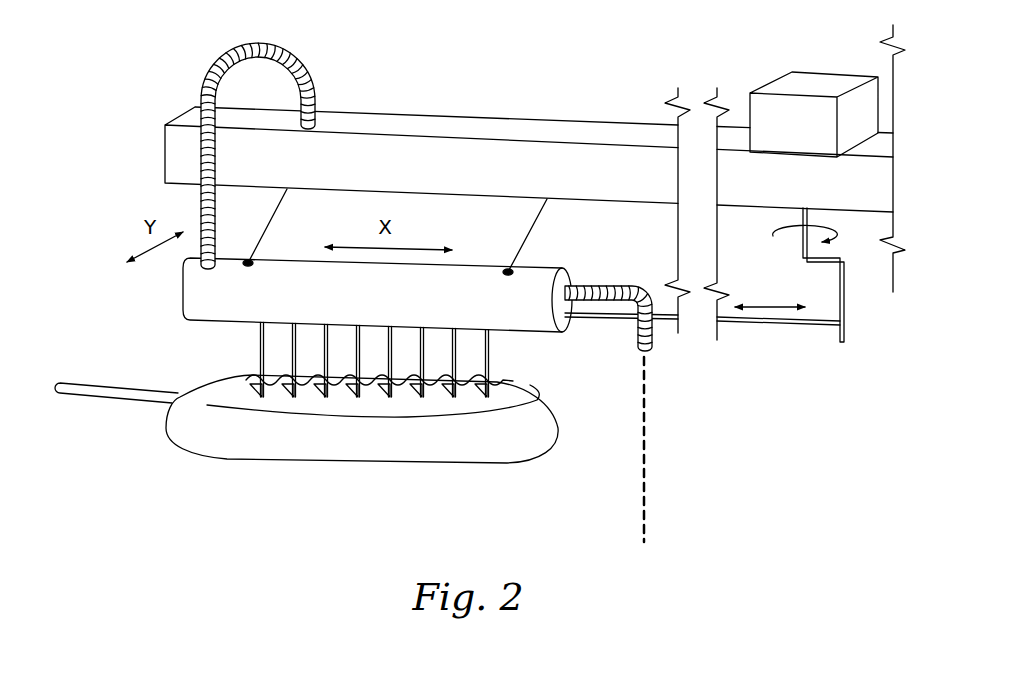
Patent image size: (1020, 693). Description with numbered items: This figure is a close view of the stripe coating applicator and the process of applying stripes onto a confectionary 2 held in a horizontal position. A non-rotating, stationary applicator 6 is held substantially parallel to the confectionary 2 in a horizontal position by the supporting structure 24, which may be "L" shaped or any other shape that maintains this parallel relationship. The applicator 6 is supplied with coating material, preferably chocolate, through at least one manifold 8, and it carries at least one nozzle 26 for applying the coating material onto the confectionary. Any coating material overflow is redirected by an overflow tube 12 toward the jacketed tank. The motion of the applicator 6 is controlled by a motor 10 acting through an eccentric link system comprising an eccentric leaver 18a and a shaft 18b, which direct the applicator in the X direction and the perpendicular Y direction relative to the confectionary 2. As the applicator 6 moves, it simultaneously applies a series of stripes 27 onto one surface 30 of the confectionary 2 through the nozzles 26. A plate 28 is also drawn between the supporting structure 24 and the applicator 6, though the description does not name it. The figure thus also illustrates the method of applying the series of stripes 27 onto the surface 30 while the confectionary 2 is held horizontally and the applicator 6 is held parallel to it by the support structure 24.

The confectionary 2 is at (205, 435).
The applicator 6 is at (175, 293).
The manifold 8 is at (238, 66).
The motor 10 is at (812, 84).
The overflow tube 12 is at (600, 287).
The eccentric leaver 18a is at (832, 272).
The shaft 18b is at (810, 330).
The supporting structure 24 is at (520, 128).
The nozzle 26 is at (428, 334).
The stripes 27 is at (520, 382).
The guide plate 28 is at (527, 243).
The surface 30 is at (225, 395).